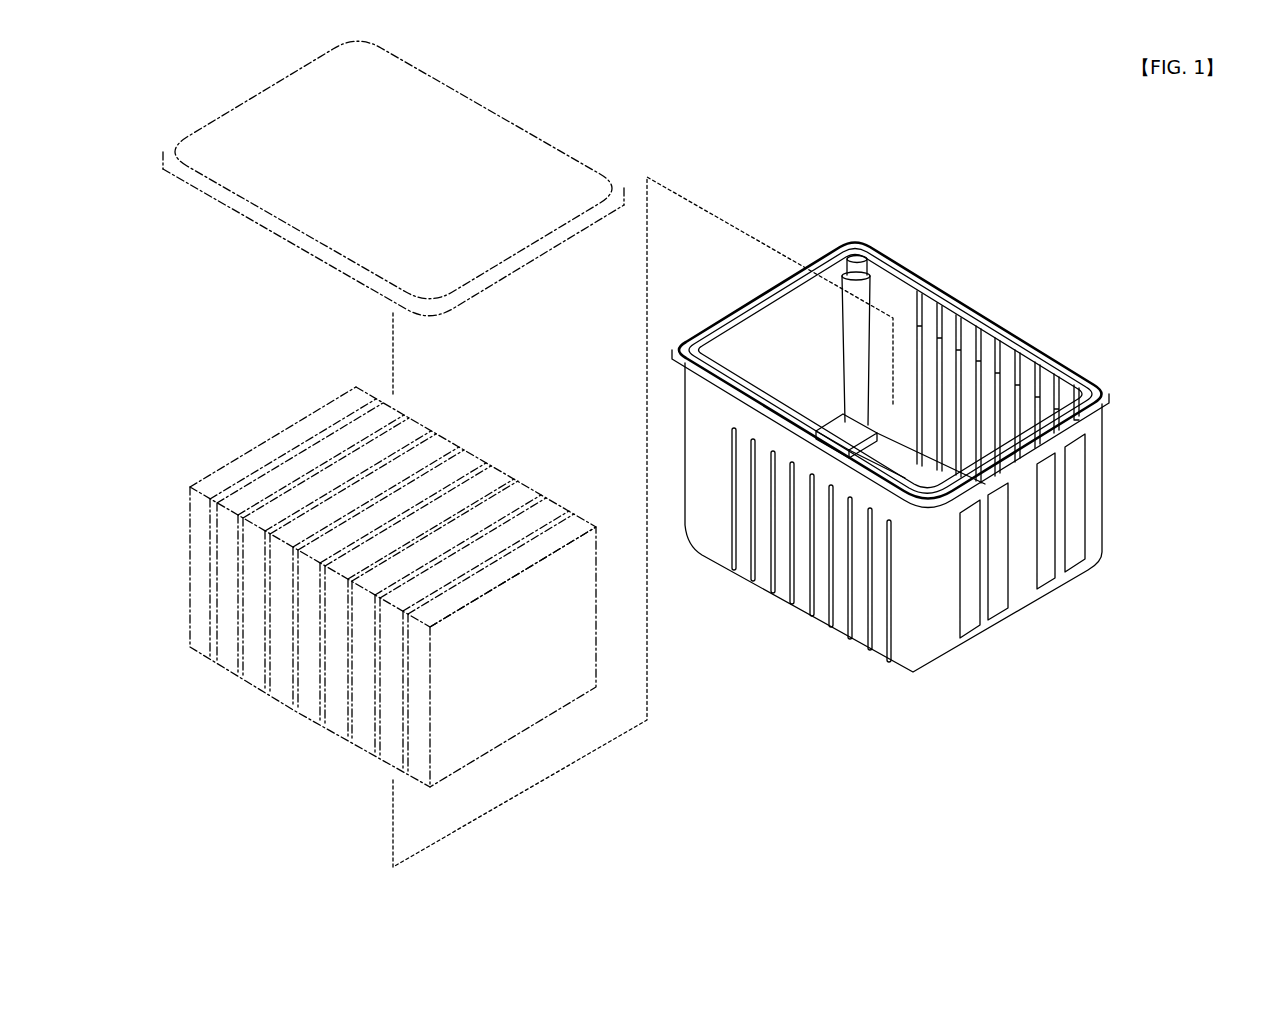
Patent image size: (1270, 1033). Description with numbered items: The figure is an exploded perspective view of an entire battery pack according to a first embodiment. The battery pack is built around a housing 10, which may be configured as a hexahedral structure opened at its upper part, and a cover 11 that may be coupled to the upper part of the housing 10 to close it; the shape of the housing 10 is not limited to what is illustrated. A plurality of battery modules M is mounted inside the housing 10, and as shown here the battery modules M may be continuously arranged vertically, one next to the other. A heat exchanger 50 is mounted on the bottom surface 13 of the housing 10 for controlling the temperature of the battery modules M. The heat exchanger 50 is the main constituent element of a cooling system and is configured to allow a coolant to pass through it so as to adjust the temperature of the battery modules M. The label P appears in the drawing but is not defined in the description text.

The cover 11 is at (527, 141).
The housing 10 is at (967, 668).
The bottom surface 13 is at (840, 417).
The heat exchanger 50 is at (903, 455).
The battery modules M is at (467, 463).
The plate P is at (282, 719).